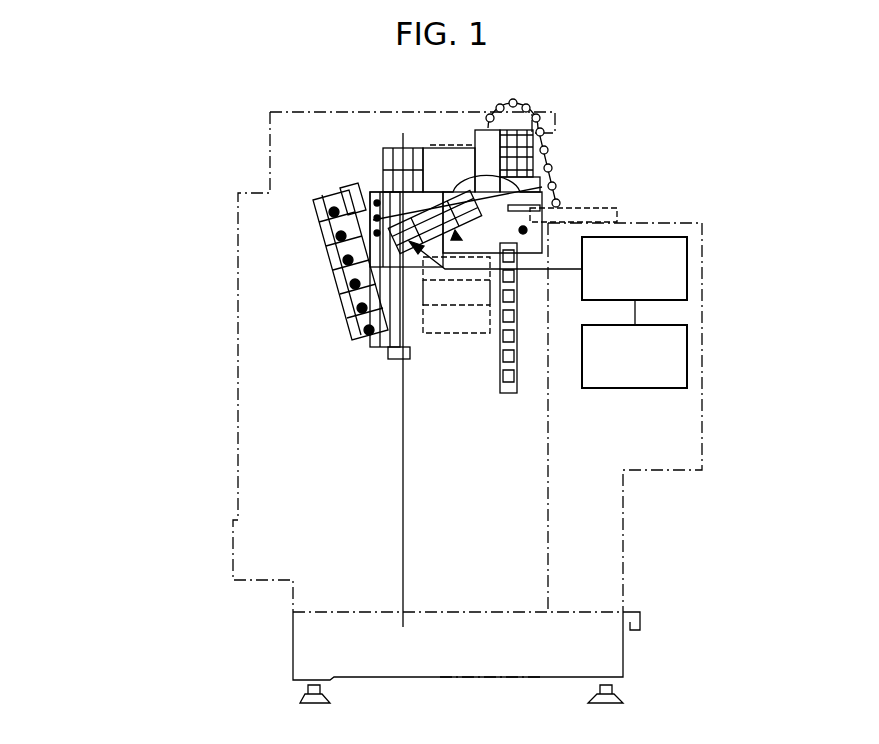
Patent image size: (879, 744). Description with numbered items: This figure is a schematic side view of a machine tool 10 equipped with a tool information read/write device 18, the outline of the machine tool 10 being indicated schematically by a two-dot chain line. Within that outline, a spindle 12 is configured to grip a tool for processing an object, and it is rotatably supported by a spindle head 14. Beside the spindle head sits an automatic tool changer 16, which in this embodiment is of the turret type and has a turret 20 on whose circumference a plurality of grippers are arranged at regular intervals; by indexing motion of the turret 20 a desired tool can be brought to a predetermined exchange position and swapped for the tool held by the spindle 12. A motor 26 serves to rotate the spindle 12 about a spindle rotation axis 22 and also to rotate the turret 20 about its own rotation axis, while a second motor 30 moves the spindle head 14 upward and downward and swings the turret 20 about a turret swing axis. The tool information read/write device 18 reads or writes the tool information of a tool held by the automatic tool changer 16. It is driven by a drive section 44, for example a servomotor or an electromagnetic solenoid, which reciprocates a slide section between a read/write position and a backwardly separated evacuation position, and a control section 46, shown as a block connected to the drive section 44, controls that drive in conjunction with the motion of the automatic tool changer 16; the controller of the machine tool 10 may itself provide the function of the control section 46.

The machine tool 10 is at (160, 277).
The spindle 12 is at (405, 347).
The spindle head 14 is at (458, 286).
The automatic tool changer 16 is at (357, 211).
The tool information read/write device 18 is at (437, 283).
The turret 20 is at (334, 270).
The spindle rotation axis 22 is at (403, 620).
The motor 26 is at (410, 150).
The motor 30 is at (557, 145).
The drive section 44 is at (687, 267).
The control section 46 is at (687, 350).